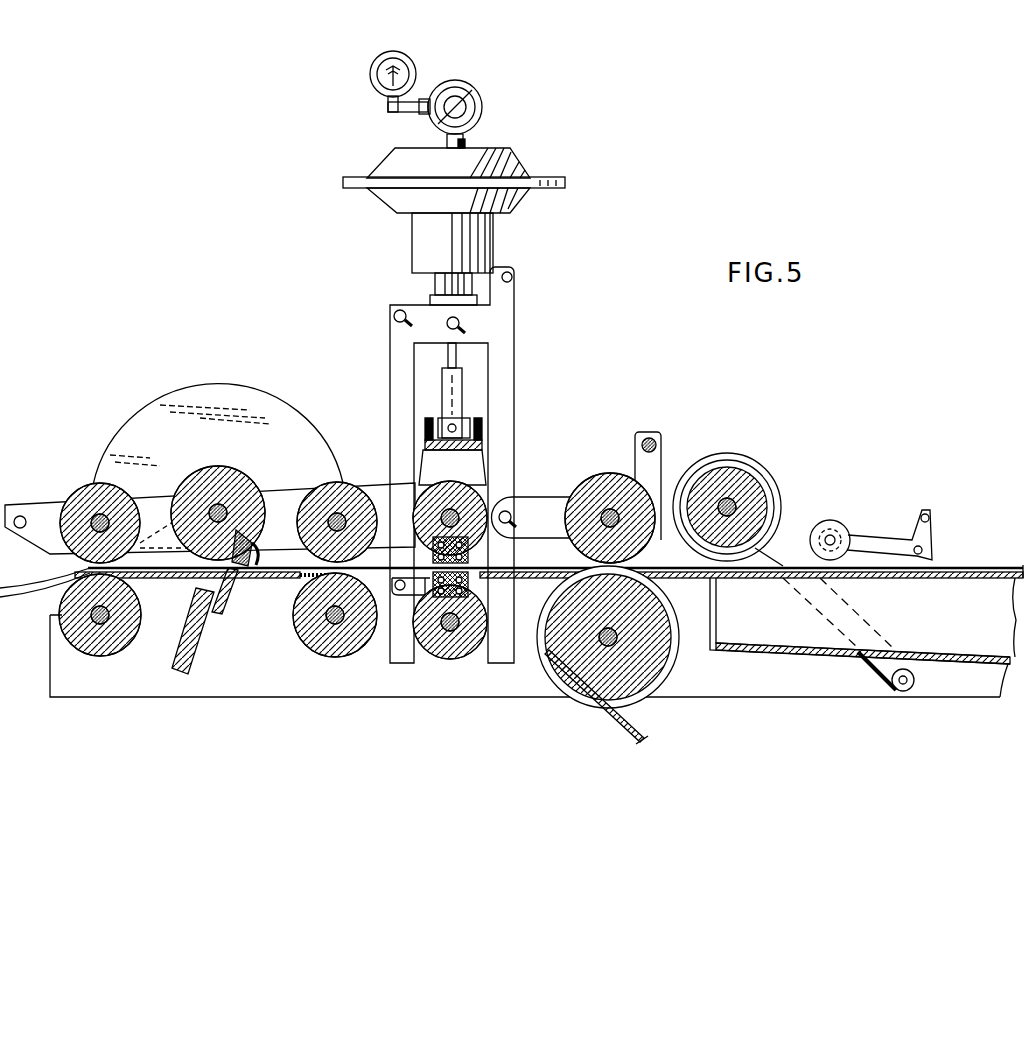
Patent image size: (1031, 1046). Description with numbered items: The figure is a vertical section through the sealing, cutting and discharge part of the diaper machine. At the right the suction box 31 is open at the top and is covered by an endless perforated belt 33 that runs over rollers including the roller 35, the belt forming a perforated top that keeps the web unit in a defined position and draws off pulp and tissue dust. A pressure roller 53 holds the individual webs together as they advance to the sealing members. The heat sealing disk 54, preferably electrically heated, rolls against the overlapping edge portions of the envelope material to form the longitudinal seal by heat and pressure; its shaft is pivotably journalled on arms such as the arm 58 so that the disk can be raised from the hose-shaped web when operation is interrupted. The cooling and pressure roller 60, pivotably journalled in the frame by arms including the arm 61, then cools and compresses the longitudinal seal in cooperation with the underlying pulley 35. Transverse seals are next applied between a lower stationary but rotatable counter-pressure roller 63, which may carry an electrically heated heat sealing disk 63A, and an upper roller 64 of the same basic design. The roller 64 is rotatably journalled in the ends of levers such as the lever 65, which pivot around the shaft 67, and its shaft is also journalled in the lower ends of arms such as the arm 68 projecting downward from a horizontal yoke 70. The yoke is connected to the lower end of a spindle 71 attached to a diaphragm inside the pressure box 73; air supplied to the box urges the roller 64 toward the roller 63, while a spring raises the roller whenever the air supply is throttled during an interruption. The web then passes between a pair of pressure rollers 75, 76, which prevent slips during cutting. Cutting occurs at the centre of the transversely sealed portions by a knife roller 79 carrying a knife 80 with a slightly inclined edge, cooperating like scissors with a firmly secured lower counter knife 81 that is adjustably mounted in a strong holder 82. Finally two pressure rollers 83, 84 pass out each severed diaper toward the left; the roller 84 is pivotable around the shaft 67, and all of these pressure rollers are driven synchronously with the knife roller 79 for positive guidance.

The pressure box 73 is at (517, 170).
The spindle 71 is at (462, 372).
The horizontal yoke 70 is at (478, 434).
The arm 68 is at (472, 470).
The arm 61 is at (541, 506).
The cooling and pressure roller 60 is at (608, 476).
The heat sealing disk 54 is at (727, 455).
The arm 58 is at (780, 548).
The pressure roller 53 is at (836, 523).
The pressure roller 84 is at (82, 494).
The pressure roller 83 is at (72, 622).
The knife roller 79 is at (210, 468).
The shaft 67 is at (233, 492).
The pressure roller 76 is at (327, 489).
The pressure roller 75 is at (307, 633).
The lever 65 is at (372, 483).
The roller 64 is at (415, 513).
The counter-pressure roller 63 is at (445, 656).
The heat sealing disk 63A is at (470, 588).
The knife 80 is at (247, 566).
The counter knife 81 is at (219, 614).
The holder 82 is at (176, 657).
The roller 35 is at (567, 668).
The endless perforated belt 33 is at (641, 730).
The suction box 31 is at (795, 642).